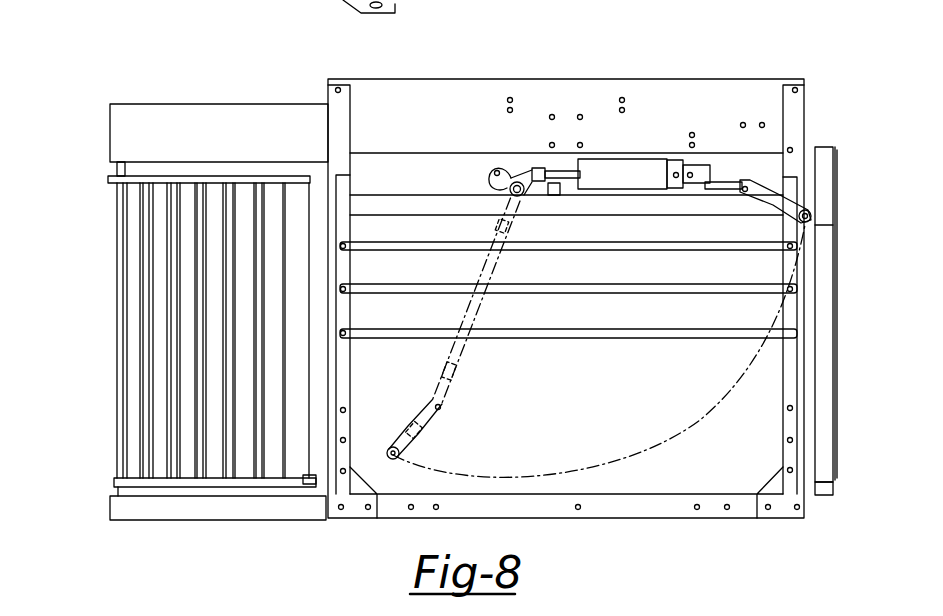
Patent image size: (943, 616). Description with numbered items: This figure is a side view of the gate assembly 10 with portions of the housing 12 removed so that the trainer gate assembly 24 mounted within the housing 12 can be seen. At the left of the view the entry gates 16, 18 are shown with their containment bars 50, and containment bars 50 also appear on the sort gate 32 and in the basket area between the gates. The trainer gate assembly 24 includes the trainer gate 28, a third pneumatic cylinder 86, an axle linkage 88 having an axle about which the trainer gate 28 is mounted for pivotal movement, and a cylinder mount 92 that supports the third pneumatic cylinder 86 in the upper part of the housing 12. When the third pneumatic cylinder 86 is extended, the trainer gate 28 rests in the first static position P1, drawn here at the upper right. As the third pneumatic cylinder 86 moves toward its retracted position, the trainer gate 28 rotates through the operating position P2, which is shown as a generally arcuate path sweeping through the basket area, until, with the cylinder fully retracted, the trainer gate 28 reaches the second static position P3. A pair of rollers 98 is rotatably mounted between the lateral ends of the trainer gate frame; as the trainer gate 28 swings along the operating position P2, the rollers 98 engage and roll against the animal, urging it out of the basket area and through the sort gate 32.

The gate assembly 10 is at (255, 83).
The housing 12 is at (616, 79).
The entry gate 16 is at (835, 355).
The entry gate 18 is at (826, 321).
The trainer gate assembly 24 is at (558, 108).
The trainer gate 28 is at (497, 265).
The sort gate 32 is at (233, 436).
The containment bars 50 is at (169, 363).
The third pneumatic cylinder 86 is at (630, 163).
The axle linkage 88 is at (515, 165).
The cylinder mount 92 is at (697, 172).
The rollers 98 is at (440, 410).
The first static position P1 is at (770, 188).
The operating position P2 is at (688, 433).
The second static position P3 is at (465, 352).